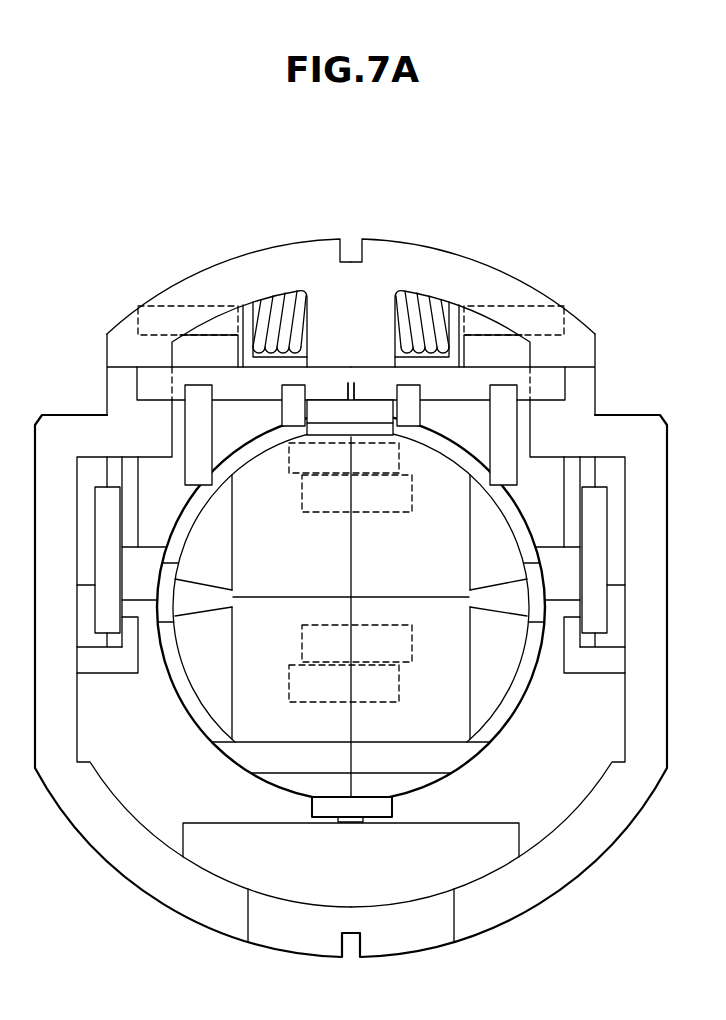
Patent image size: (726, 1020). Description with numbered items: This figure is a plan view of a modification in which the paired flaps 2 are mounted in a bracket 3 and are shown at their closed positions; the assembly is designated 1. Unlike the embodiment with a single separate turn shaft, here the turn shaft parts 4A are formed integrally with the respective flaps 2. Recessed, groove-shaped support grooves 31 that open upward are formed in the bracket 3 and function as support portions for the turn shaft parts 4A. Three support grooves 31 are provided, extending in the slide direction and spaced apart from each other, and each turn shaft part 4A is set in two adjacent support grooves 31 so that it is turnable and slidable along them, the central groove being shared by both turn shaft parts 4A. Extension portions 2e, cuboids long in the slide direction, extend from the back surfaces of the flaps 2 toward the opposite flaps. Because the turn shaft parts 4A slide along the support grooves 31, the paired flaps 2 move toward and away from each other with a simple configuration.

The motor / stator unit 1 is at (548, 242).
The flap 2 is at (176, 712).
The extension portion 2e is at (399, 458).
The bracket 3 is at (629, 409).
The turn shaft part 4A is at (230, 382).
The support groove 31 is at (125, 377).